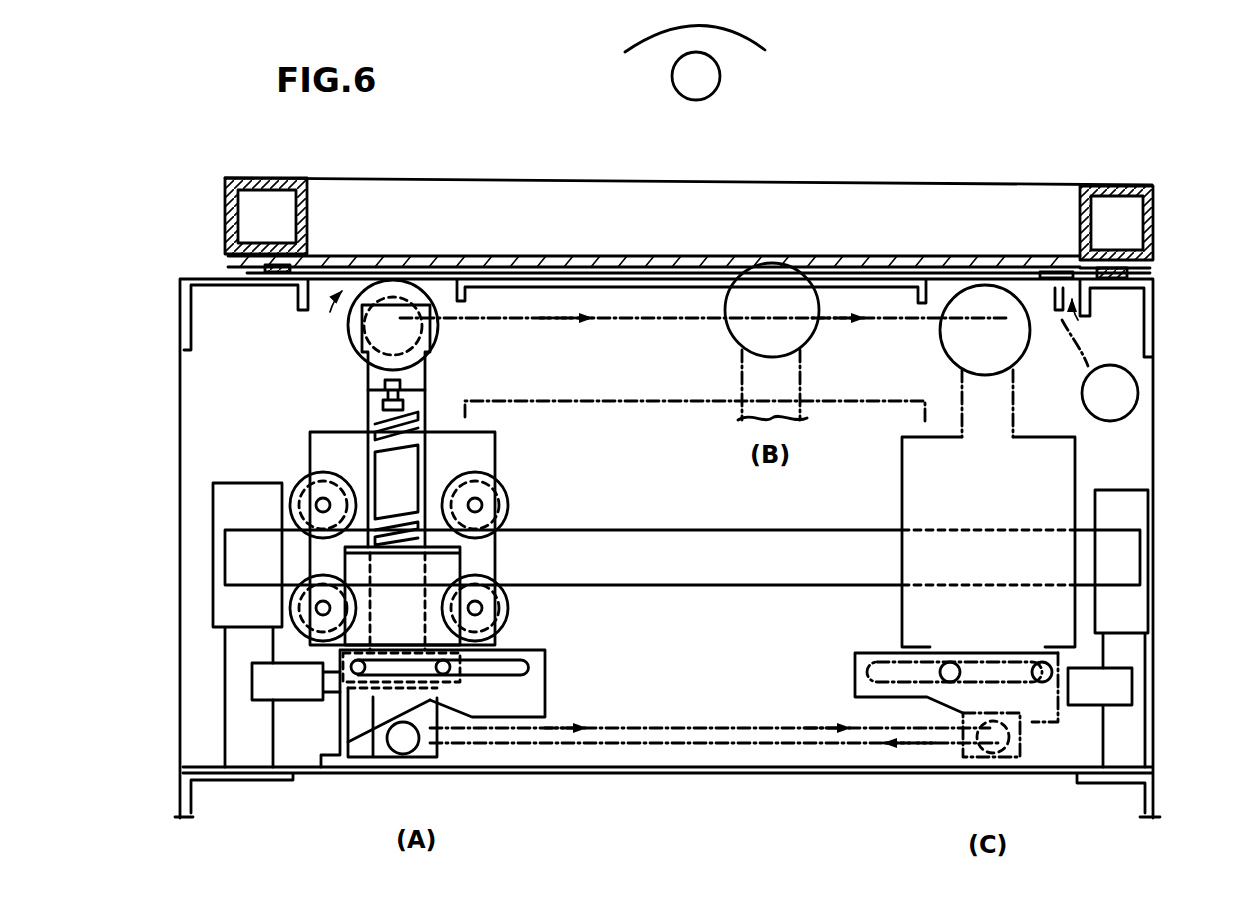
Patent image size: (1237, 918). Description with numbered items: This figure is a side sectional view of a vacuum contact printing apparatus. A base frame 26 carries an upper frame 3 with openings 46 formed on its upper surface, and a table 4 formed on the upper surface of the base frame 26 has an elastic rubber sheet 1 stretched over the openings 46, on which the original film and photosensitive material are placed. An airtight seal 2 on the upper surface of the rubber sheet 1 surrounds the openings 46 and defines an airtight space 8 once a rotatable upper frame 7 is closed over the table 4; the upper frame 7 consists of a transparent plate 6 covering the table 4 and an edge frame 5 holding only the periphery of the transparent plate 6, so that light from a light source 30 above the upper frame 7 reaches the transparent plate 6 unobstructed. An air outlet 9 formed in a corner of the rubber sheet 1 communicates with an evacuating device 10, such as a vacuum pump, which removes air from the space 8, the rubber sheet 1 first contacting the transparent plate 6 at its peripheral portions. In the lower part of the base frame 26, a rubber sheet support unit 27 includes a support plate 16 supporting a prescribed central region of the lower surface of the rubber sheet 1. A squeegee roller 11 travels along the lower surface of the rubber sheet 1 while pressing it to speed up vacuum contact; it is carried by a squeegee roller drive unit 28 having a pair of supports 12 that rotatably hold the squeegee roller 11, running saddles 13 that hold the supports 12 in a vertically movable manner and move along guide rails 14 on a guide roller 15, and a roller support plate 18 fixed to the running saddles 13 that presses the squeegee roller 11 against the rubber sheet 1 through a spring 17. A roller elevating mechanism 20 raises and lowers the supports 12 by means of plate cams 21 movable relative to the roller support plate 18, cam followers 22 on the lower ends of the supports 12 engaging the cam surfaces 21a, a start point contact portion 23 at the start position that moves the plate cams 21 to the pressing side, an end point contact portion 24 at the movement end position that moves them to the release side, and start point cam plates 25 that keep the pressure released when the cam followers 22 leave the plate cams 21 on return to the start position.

The elastic rubber sheet 1 is at (556, 273).
The airtight seal 2 is at (292, 266).
The upper frame 3 is at (178, 303).
The table 4 is at (657, 252).
The edge frame 5 is at (228, 200).
The transparent plate 6 is at (890, 260).
The rotatable upper frame 7 is at (805, 176).
The space 8 is at (458, 268).
The air outlet 9 is at (1056, 300).
The evacuating device 10 is at (1138, 393).
The squeegee roller 11 is at (360, 338).
The supports 12 is at (368, 390).
The running saddles 13 is at (310, 452).
The guide rails 14 is at (632, 538).
The guide roller 15 is at (506, 492).
The support plate 16 is at (545, 295).
The spring 17 is at (415, 466).
The roller support plate 18 is at (345, 558).
The roller elevating mechanism 20 is at (480, 785).
The plate cams 21 is at (547, 672).
The cam surfaces 21a is at (932, 698).
The cam followers 22 is at (403, 748).
The start point contact portion 23 is at (308, 692).
The end point contact portion 24 is at (1090, 705).
The start point cam plates 25 is at (350, 744).
The base frame 26 is at (1157, 596).
The rubber sheet support unit 27 is at (530, 398).
The squeegee roller drive unit 28 is at (285, 645).
The light source 30 is at (713, 58).
The openings 46 is at (335, 318).